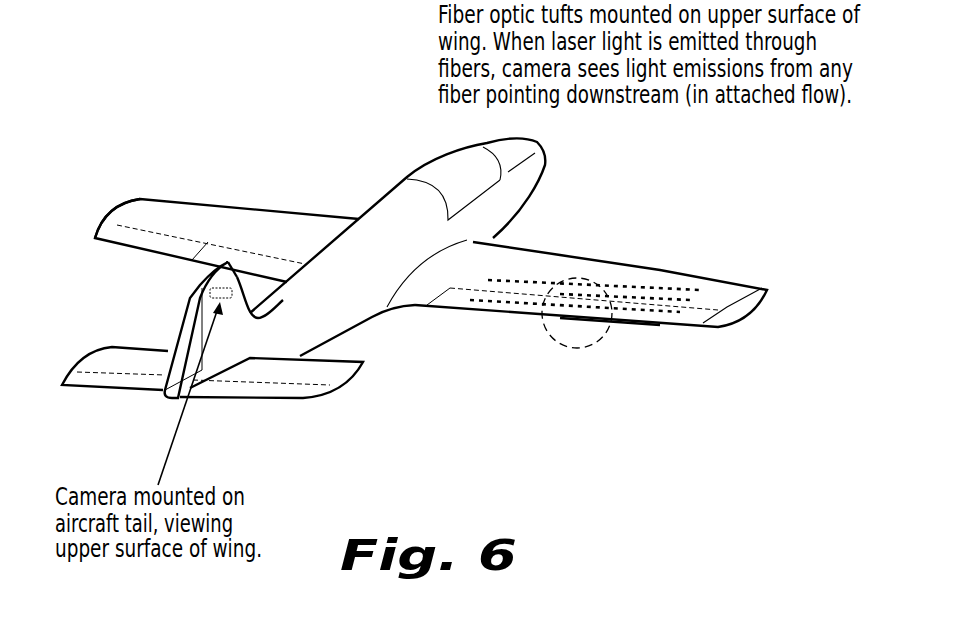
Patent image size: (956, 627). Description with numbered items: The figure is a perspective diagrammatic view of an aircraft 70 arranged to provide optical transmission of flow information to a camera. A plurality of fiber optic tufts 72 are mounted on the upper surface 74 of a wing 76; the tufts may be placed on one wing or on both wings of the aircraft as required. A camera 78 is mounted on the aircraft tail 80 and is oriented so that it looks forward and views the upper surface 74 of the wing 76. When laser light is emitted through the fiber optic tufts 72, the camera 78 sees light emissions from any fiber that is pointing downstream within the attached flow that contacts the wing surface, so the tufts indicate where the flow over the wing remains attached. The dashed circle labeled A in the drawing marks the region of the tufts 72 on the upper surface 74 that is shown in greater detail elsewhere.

The aircraft 70 is at (392, 152).
The fiber optic tufts 72 is at (622, 281).
The upper surface 74 is at (197, 212).
The wing 76 is at (118, 210).
The camera 78 is at (209, 293).
The aircraft tail 80 is at (180, 332).
The detail area A is at (567, 343).